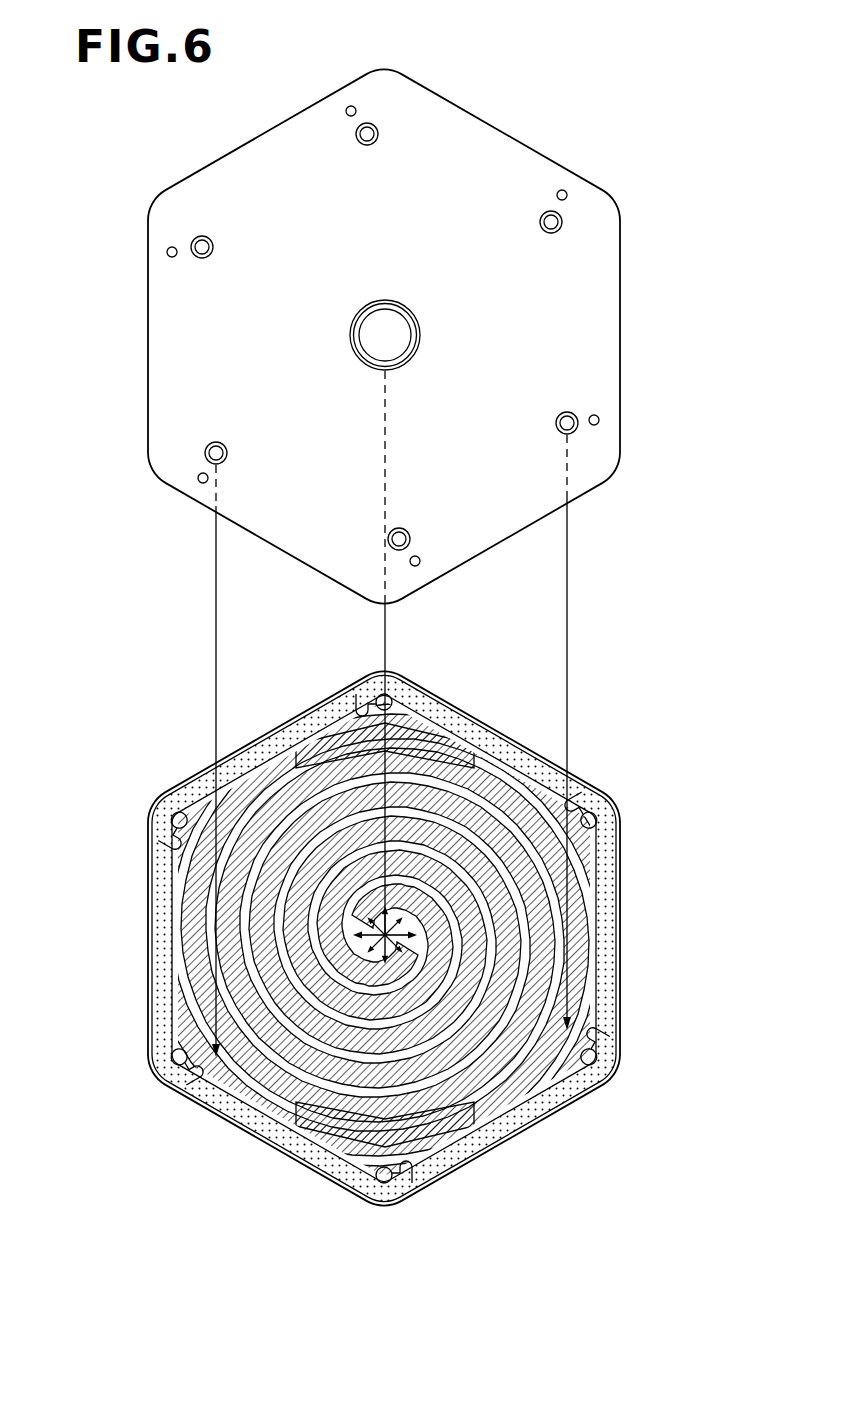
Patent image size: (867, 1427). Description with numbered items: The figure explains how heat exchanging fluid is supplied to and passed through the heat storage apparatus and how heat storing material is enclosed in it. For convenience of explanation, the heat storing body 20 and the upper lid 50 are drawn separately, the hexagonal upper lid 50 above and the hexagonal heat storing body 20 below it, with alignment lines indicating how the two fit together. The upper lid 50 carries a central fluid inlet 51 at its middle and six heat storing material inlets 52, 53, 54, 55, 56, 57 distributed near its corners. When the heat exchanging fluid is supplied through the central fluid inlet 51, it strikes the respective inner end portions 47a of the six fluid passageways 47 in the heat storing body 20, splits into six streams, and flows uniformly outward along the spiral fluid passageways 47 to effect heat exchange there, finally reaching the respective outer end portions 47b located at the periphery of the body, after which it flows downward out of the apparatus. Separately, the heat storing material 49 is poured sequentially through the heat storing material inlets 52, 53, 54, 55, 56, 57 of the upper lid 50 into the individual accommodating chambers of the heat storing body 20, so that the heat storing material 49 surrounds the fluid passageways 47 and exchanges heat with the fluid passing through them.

The heat storing body 20 is at (168, 754).
The fluid passageways 47 is at (227, 903).
The inner end portions 47a is at (363, 957).
The outer end portions 47b is at (393, 713).
The heat storing material 49 is at (580, 988).
The upper lid 50 is at (626, 341).
The central fluid inlet 51 is at (383, 323).
The heat storing material inlet 52 is at (560, 219).
The heat storing material inlet 53 is at (572, 432).
The heat storing material inlet 54 is at (398, 548).
The heat storing material inlet 55 is at (210, 452).
The heat storing material inlet 56 is at (194, 238).
The heat storing material inlet 57 is at (377, 123).